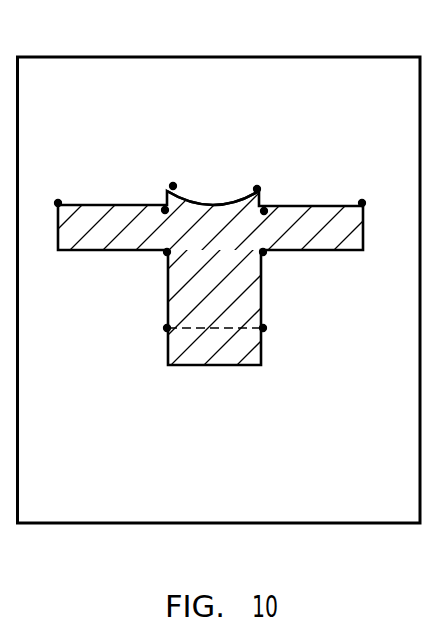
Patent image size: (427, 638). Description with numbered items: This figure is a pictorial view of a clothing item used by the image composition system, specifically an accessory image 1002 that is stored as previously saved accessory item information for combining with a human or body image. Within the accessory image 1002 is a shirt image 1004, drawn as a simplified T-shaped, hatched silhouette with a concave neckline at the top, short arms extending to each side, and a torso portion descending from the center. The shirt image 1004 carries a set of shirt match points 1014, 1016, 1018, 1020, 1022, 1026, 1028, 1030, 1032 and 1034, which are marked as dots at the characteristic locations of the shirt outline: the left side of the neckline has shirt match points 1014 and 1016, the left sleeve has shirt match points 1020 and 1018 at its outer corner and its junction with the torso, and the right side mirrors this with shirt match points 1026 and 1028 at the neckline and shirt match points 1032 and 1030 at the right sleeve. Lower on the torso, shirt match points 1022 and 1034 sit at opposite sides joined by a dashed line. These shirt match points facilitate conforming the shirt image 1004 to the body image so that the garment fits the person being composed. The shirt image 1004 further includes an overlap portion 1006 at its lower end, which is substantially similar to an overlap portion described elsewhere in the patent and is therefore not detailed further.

The accessory image 1002 is at (345, 110).
The shirt image 1004 is at (233, 200).
The overlap portion 1006 is at (166, 354).
The shirt match point 1014 is at (173, 186).
The shirt match point 1016 is at (165, 210).
The shirt match point 1018 is at (167, 252).
The shirt match point 1020 is at (58, 203).
The shirt match point 1022 is at (167, 328).
The shirt match point 1026 is at (257, 189).
The shirt match point 1028 is at (264, 211).
The shirt match point 1030 is at (263, 252).
The shirt match point 1032 is at (362, 203).
The shirt match point 1034 is at (263, 328).